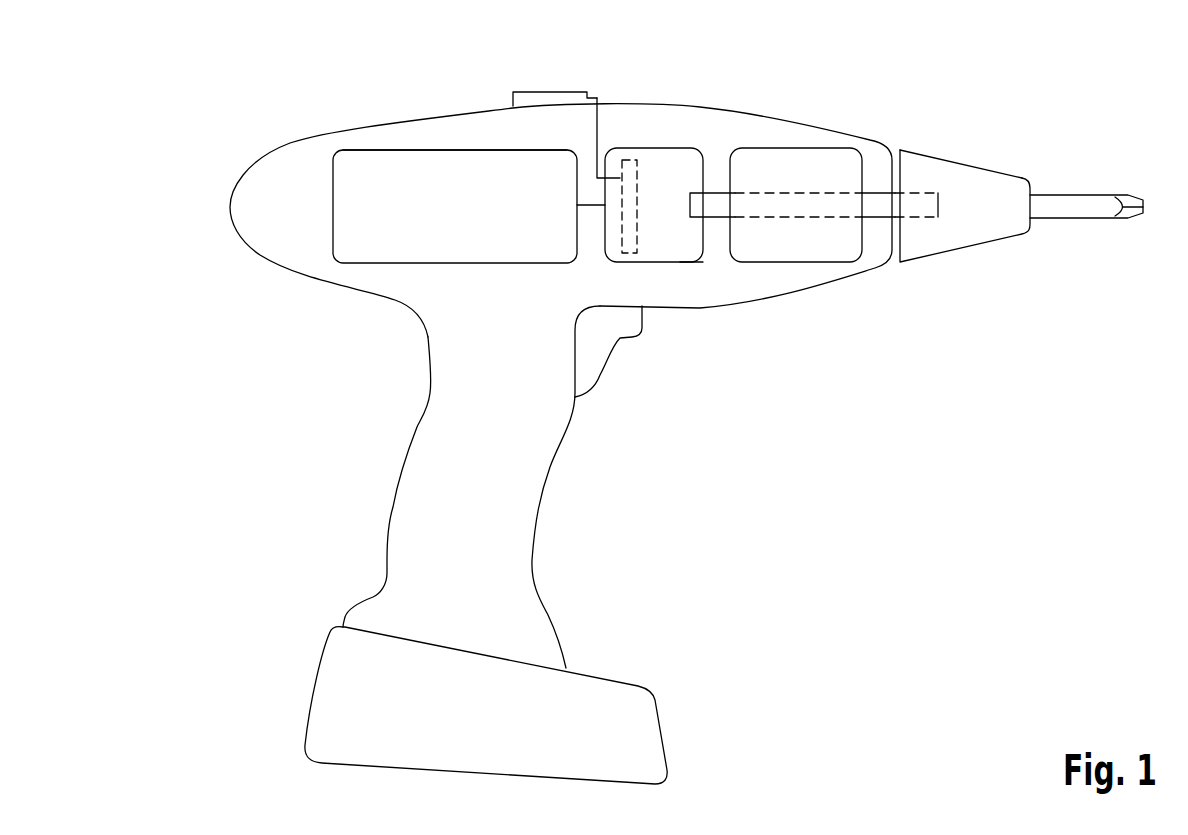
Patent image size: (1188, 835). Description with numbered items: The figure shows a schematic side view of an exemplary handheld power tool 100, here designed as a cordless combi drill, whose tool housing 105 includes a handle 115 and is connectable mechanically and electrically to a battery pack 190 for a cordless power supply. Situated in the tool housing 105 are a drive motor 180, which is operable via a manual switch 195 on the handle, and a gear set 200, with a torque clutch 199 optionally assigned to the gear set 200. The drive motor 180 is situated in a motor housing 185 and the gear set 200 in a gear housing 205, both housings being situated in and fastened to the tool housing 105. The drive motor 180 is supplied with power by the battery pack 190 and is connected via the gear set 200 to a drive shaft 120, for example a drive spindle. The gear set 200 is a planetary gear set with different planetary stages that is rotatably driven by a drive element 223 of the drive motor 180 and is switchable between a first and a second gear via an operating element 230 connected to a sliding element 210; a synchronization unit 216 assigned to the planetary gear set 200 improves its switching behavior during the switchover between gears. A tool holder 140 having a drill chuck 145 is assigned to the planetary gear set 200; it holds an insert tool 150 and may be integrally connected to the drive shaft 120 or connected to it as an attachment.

The handheld power tool 100 is at (1036, 100).
The tool housing 105 is at (260, 208).
The handle 115 is at (423, 478).
The drive shaft 120 is at (722, 200).
The tool holder 140 is at (970, 223).
The drill chuck 145 is at (980, 160).
The insert tool 150 is at (1087, 207).
The drive motor 180 is at (427, 170).
The motor housing 185 is at (378, 148).
The battery pack 190 is at (335, 692).
The manual switch 195 is at (620, 338).
The torque clutch 199 is at (795, 168).
The gear set 200 is at (648, 167).
The gear housing 205 is at (683, 262).
The sliding element 210 is at (598, 130).
The synchronization unit 216 is at (635, 235).
The drive element 223 is at (593, 207).
The operating element 230 is at (550, 92).